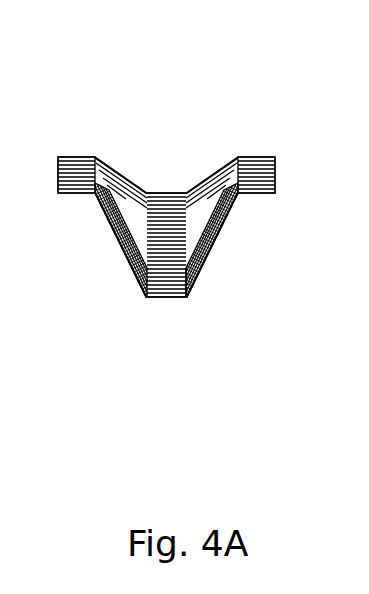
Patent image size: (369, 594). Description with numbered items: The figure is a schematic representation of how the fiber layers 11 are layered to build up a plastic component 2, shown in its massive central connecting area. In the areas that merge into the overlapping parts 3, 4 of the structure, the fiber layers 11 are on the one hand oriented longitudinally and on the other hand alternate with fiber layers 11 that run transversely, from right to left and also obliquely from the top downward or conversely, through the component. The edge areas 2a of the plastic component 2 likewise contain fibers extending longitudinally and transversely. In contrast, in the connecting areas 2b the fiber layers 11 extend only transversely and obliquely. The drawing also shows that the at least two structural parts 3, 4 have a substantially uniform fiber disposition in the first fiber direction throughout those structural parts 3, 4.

The plastic component 2 is at (206, 112).
The edge areas 2a is at (73, 152).
The connecting areas 2b is at (105, 248).
The overlapping part 3 is at (167, 202).
The overlapping part 4 is at (167, 282).
The fiber layers 11 is at (181, 278).